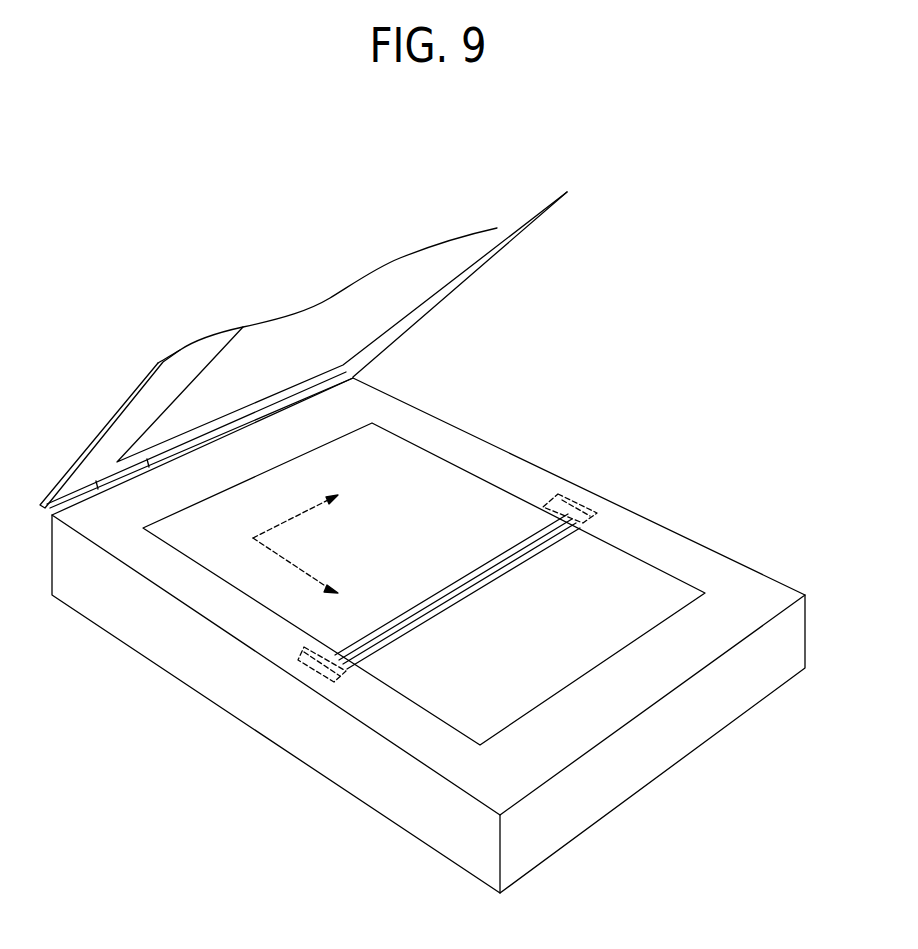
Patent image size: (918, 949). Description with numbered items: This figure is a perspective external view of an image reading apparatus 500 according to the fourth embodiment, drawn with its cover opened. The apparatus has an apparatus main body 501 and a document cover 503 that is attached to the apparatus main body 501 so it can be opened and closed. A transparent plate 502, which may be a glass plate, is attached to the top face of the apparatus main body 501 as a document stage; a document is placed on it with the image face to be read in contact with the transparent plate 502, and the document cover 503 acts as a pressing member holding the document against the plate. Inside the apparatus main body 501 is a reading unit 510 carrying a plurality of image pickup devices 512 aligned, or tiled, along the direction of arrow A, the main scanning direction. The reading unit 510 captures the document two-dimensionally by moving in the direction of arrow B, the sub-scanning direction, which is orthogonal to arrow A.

The image reading apparatus 500 is at (422, 542).
The apparatus main body 501 is at (414, 406).
The transparent plate 502 is at (450, 483).
The document cover 503 is at (467, 268).
The reading unit 510 is at (545, 521).
The image pickup devices 512 is at (560, 498).